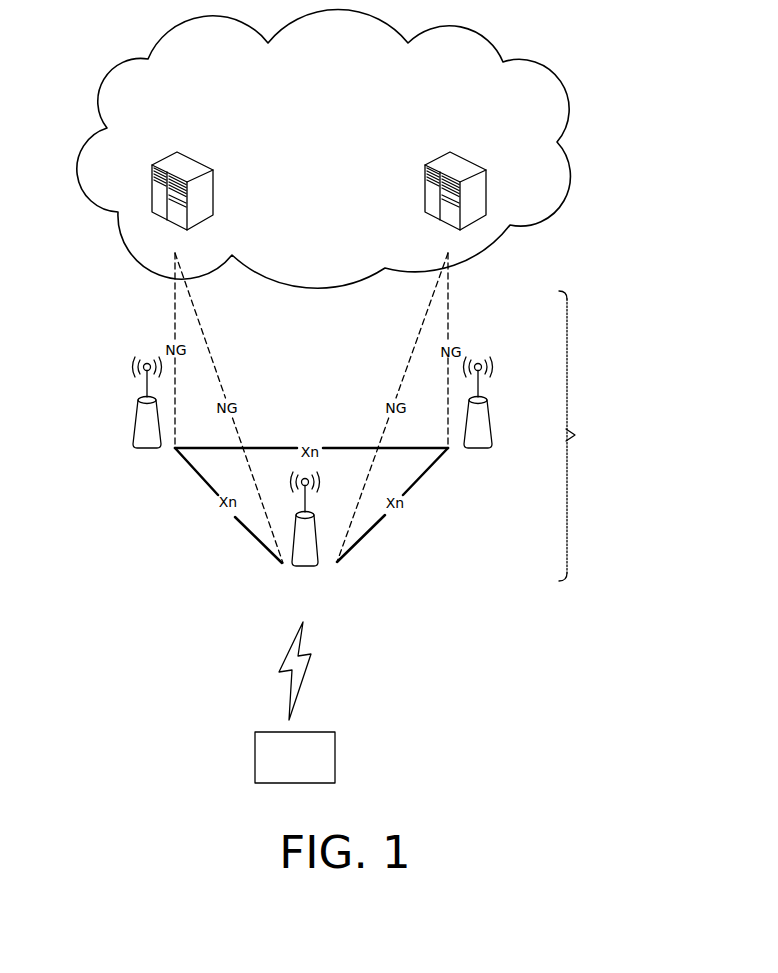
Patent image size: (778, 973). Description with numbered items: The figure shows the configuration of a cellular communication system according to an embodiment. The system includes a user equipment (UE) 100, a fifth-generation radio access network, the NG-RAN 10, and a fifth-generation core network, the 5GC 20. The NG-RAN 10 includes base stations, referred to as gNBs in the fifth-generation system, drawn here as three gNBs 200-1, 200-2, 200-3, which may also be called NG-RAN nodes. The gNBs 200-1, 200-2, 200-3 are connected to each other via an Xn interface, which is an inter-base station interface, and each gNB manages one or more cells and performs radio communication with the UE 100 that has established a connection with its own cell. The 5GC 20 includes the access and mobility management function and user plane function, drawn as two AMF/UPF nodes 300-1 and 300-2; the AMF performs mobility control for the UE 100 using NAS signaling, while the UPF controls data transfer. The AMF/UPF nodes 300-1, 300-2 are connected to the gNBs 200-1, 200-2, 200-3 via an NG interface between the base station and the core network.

The 5G core network (5GC) 20 is at (487, 34).
The AMF/UPF 300-1 is at (203, 157).
The AMF/UPF 300-2 is at (460, 158).
The gNB 200-1 is at (135, 424).
The gNB 200-2 is at (318, 548).
The gNB 200-3 is at (488, 408).
The NG-RAN 10 is at (601, 436).
The user equipment (UE) 100 is at (336, 758).